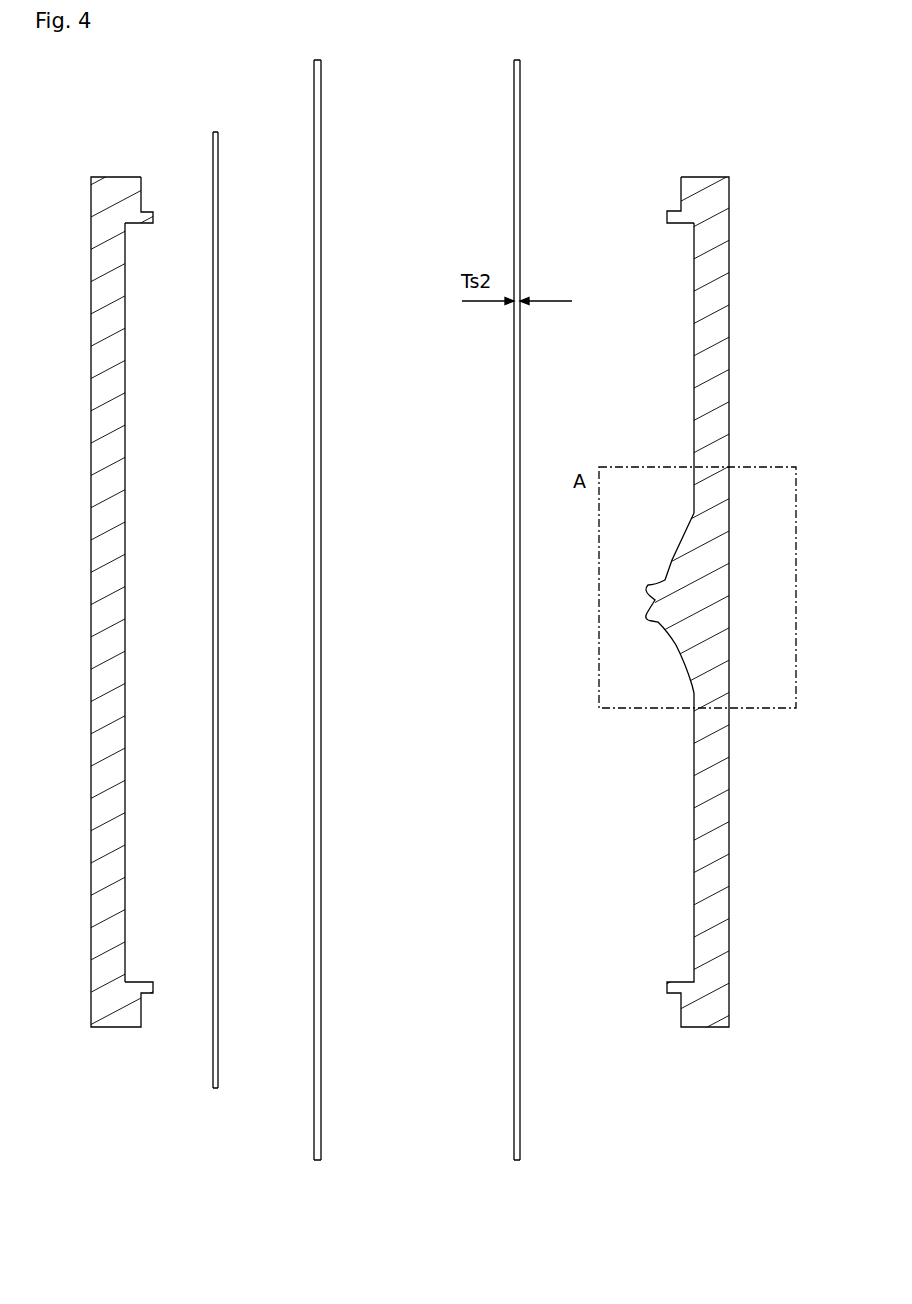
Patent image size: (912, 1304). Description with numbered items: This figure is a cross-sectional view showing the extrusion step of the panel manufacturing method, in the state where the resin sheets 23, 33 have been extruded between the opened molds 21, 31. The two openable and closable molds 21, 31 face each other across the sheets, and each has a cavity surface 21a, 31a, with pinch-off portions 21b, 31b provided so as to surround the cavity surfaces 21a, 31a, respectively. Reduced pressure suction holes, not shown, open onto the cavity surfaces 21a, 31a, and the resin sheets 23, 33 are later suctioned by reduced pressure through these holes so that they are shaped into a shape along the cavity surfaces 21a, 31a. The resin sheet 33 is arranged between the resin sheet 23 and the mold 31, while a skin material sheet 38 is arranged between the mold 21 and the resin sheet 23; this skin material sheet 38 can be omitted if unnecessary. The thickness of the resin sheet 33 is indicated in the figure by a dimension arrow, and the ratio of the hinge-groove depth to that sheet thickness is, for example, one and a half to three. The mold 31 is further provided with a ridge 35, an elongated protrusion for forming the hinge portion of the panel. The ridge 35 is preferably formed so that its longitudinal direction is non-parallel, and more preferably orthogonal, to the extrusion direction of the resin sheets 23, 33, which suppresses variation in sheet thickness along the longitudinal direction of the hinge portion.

The mold 21 is at (117, 1022).
The cavity surface 21a is at (127, 481).
The pinch-off portion 21b is at (153, 219).
The resin sheet 23 is at (314, 89).
The resin sheet 33 is at (520, 90).
The skin material sheet 38 is at (217, 563).
The mold 31 is at (702, 1017).
The cavity surface 31a is at (694, 442).
The pinch-off portion 31b is at (668, 217).
The ridge 35 is at (668, 550).